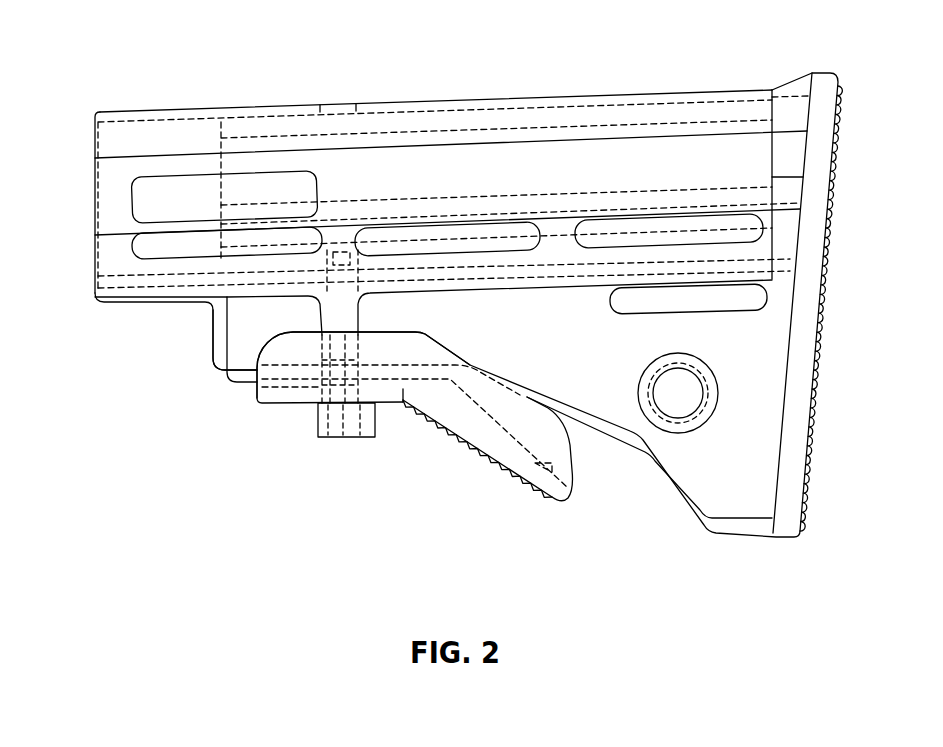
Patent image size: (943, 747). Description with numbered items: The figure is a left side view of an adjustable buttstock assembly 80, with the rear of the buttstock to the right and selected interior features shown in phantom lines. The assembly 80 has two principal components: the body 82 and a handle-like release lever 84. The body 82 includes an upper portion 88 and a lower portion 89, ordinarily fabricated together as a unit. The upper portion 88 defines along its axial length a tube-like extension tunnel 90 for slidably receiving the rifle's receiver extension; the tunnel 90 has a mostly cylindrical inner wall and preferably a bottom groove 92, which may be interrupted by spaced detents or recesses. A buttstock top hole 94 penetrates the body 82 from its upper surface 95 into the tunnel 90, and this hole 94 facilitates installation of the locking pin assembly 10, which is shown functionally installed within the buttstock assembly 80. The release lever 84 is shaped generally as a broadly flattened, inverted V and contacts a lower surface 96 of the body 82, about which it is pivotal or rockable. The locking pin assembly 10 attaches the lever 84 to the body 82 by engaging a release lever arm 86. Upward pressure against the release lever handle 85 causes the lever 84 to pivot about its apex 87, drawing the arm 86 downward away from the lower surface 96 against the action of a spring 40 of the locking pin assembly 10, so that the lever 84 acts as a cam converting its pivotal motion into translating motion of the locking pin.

The buttstock assembly 80 is at (210, 58).
The body 82 is at (115, 143).
The buttstock top hole 94 is at (343, 103).
The upper surface 95 is at (485, 93).
The extension tunnel 90 is at (625, 167).
The upper portion 88 is at (735, 86).
The groove 92 is at (753, 250).
The lower portion 89 is at (752, 415).
The spring 40 is at (320, 332).
The release lever arm 86 is at (257, 397).
The locking pin assembly 10 is at (311, 415).
The apex 87 is at (403, 390).
The lower surface 96 is at (450, 375).
The release lever 84 is at (513, 432).
The release lever handle 85 is at (550, 497).